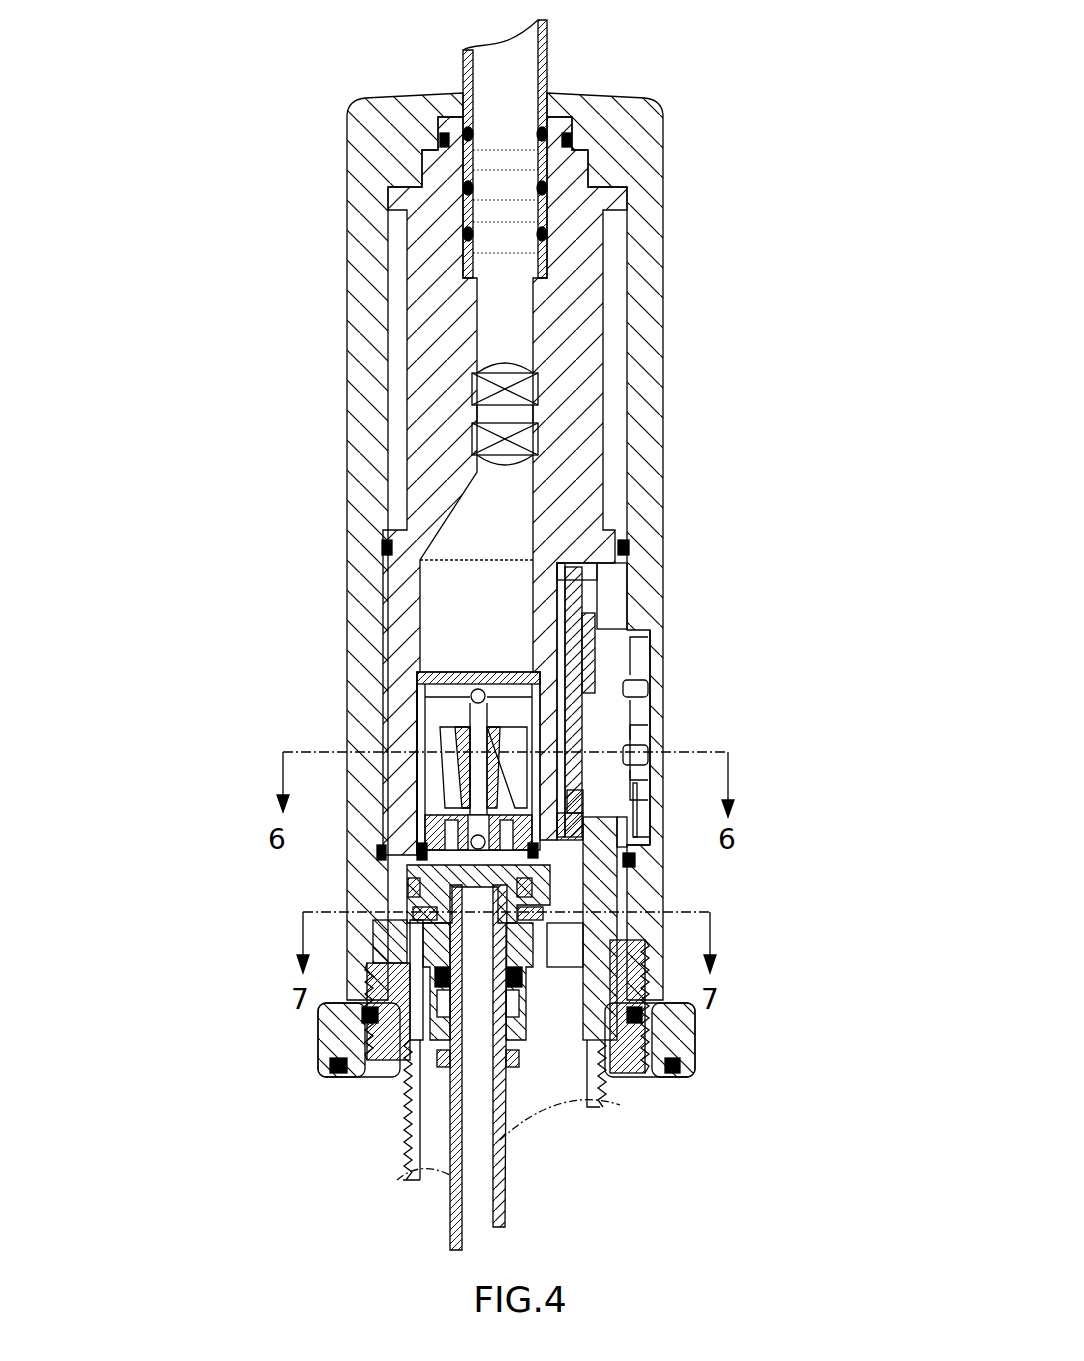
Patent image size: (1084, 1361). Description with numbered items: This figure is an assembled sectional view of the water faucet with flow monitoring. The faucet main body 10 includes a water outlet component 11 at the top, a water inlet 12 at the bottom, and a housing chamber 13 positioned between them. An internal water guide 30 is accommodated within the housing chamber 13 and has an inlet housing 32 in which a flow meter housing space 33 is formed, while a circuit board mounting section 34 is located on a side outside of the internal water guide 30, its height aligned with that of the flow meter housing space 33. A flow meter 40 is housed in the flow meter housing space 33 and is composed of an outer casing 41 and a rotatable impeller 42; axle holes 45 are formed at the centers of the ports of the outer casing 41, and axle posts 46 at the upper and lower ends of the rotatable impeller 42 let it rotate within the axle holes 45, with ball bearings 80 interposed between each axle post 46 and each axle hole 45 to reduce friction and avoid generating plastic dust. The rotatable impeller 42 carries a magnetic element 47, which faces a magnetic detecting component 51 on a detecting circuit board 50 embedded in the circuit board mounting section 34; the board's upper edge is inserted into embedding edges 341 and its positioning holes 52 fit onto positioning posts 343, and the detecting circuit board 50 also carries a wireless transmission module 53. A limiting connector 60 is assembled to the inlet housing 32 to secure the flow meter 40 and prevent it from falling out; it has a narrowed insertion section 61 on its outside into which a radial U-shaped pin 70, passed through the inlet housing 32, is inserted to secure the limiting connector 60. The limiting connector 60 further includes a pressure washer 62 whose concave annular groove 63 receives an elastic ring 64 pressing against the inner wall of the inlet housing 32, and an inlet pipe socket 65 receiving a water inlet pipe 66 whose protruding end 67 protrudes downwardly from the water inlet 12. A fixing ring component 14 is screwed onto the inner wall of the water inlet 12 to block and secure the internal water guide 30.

The faucet main body 10 is at (328, 286).
The water outlet component 11 is at (547, 50).
The water inlet 12 is at (650, 1078).
The housing chamber 13 is at (612, 428).
The fixing ring component 14 is at (390, 1073).
The internal water guide 30 is at (618, 284).
The inlet housing 32 is at (605, 880).
The flow meter housing space 33 is at (390, 722).
The circuit board mounting section 34 is at (642, 677).
The embedding edges 341 is at (593, 577).
The positioning posts 343 is at (633, 837).
The flow meter 40 is at (408, 651).
The outer casing 41 is at (582, 718).
The rotatable impeller 42 is at (445, 735).
The axle holes 45 is at (480, 688).
The axle posts 46 is at (425, 678).
The magnetic element 47 is at (450, 775).
The detecting circuit board 50 is at (593, 620).
The magnetic detecting component 51 is at (637, 760).
The positioning holes 52 is at (593, 803).
The wireless transmission module 53 is at (597, 633).
The limiting connector 60 is at (540, 1054).
The narrowed insertion section 61 is at (645, 1040).
The pressure washer 62 is at (407, 867).
The concave annular groove 63 is at (405, 885).
The elastic ring 64 is at (403, 897).
The inlet pipe socket 65 is at (507, 1057).
The water inlet pipe 66 is at (435, 1089).
The protruding end 67 is at (505, 1225).
The radial U-shaped pin 70 is at (413, 917).
The ball bearings 80 is at (650, 713).